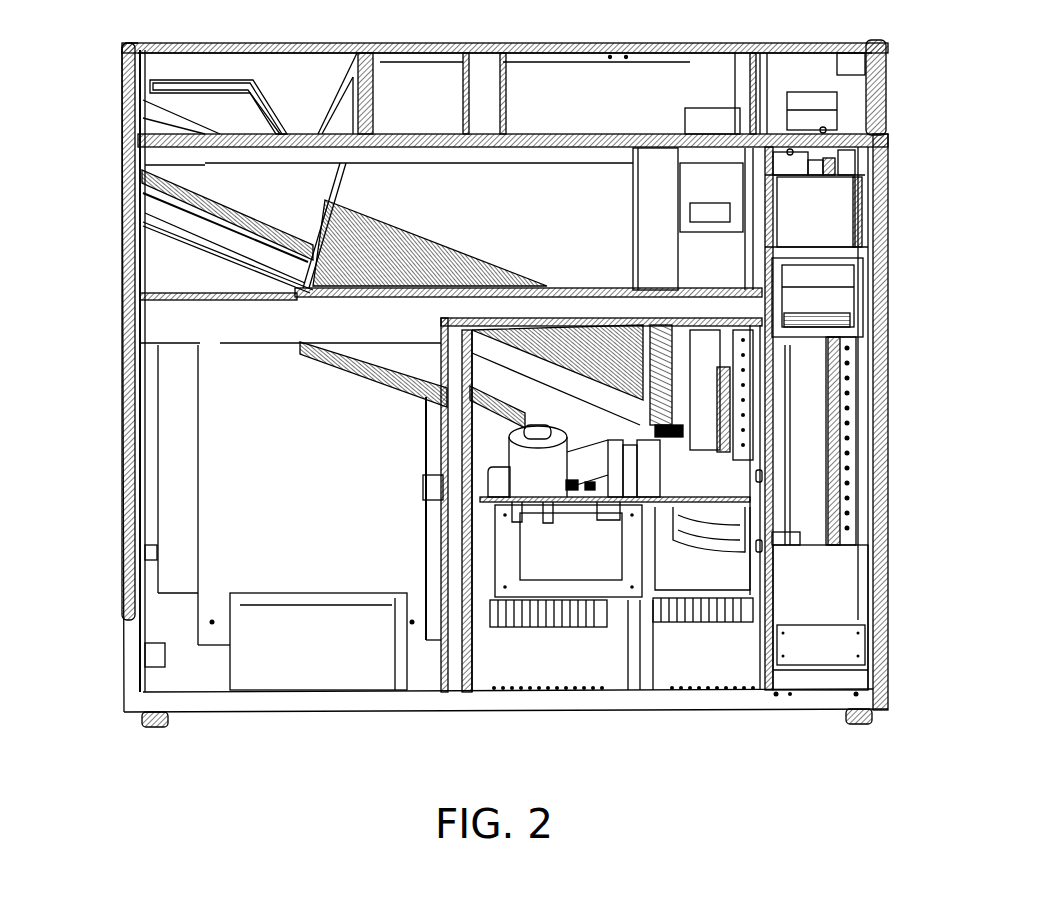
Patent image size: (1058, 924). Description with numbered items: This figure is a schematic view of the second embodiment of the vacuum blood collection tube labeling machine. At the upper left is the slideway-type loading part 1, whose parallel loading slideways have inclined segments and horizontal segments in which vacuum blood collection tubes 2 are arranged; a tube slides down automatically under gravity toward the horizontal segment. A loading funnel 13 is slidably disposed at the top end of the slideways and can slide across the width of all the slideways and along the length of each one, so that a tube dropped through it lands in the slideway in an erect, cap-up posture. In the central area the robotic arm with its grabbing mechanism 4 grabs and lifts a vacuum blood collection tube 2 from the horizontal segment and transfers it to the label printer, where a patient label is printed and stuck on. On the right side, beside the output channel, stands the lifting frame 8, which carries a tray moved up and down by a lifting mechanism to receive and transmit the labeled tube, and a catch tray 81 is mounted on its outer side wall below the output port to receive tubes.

The loading funnel 13 is at (122, 66).
The vacuum blood collection tube 2 is at (455, 248).
The loading part 1 is at (408, 360).
The lifting frame 8 is at (835, 212).
The catch tray 81 is at (853, 316).
The grabbing mechanism 4 is at (757, 422).